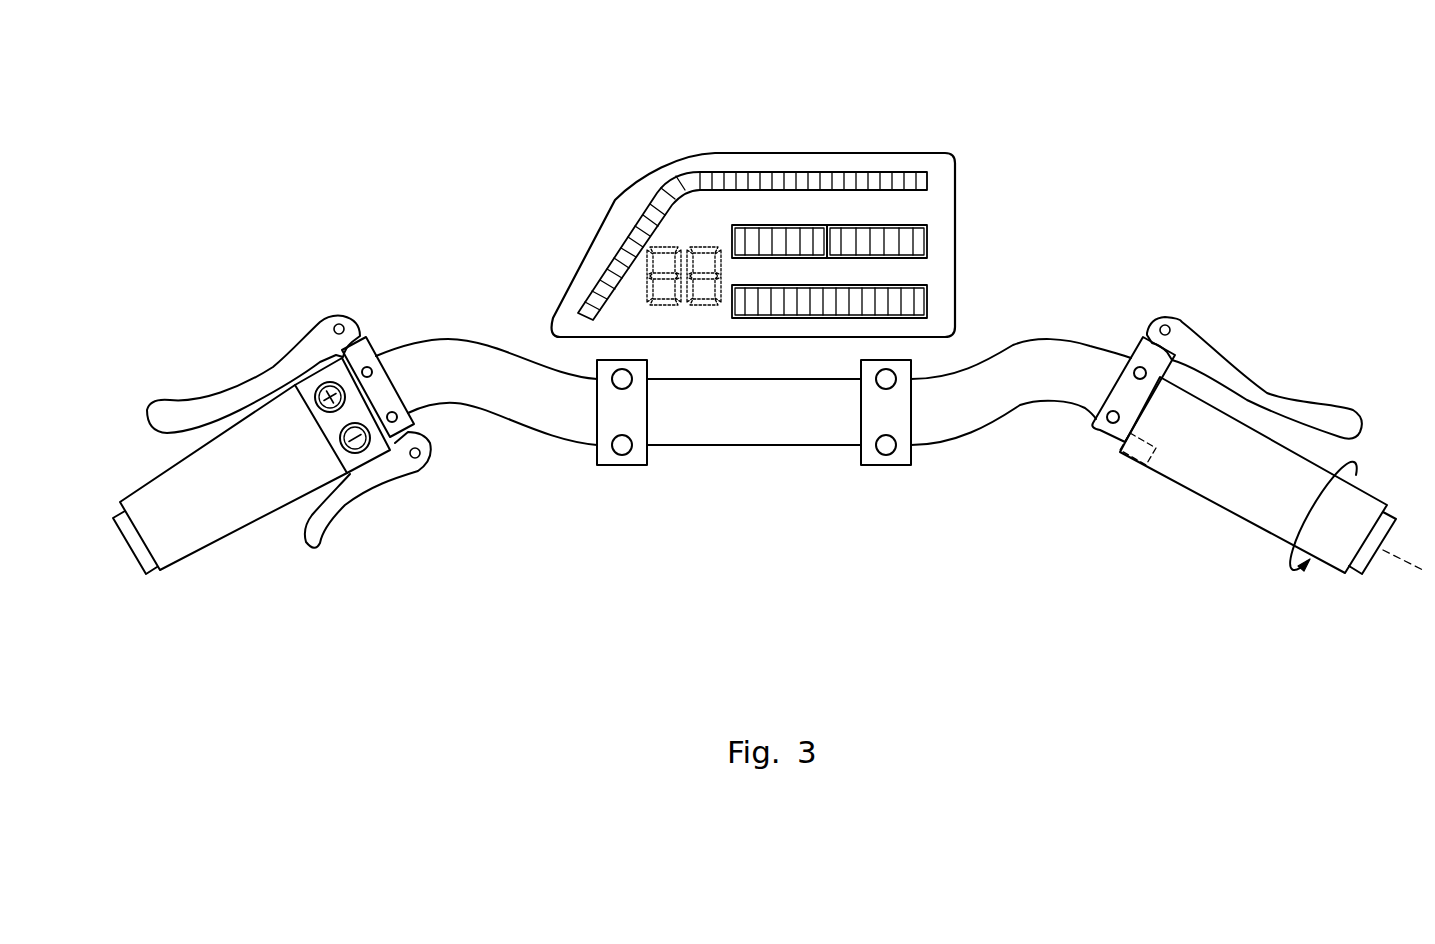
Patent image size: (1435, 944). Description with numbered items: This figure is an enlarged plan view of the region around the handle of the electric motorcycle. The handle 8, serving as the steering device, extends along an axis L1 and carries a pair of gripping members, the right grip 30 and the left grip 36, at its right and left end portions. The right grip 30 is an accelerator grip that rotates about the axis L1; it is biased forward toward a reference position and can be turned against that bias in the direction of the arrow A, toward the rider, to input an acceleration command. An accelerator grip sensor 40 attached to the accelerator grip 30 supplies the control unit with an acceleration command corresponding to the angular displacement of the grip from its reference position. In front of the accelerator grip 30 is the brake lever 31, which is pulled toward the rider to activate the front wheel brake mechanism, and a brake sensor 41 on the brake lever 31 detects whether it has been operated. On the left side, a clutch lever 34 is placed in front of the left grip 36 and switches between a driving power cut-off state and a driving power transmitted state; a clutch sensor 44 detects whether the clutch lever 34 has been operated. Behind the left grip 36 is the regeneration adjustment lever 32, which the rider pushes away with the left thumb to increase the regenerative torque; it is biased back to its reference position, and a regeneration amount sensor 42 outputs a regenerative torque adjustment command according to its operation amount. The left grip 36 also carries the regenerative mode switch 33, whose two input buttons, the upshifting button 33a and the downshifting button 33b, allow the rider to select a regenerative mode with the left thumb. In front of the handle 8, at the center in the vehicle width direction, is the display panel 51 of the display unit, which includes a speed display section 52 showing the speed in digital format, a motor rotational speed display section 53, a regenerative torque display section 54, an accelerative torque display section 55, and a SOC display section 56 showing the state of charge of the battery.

The handle 8 is at (790, 447).
The accelerator grip 30 is at (1273, 530).
The brake lever 31 is at (1253, 378).
The regeneration adjustment lever 32 is at (367, 493).
The regenerative mode switch 33 is at (401, 359).
The upshifting button 33a is at (340, 382).
The downshifting button 33b is at (375, 405).
The clutch lever 34 is at (270, 367).
The left grip 36 is at (237, 530).
The accelerator grip sensor 40 is at (1138, 467).
The brake sensor 41 is at (1168, 322).
The regeneration amount sensor 42 is at (418, 462).
The clutch sensor 44 is at (336, 324).
The display panel 51 is at (848, 153).
The speed display section 52 is at (683, 250).
The motor rotational speed display section 53 is at (690, 172).
The regenerative torque display section 54 is at (812, 225).
The accelerative torque display section 55 is at (860, 225).
The SOC display section 56 is at (867, 287).
The arrow A is at (1363, 465).
The axis L1 is at (1410, 560).